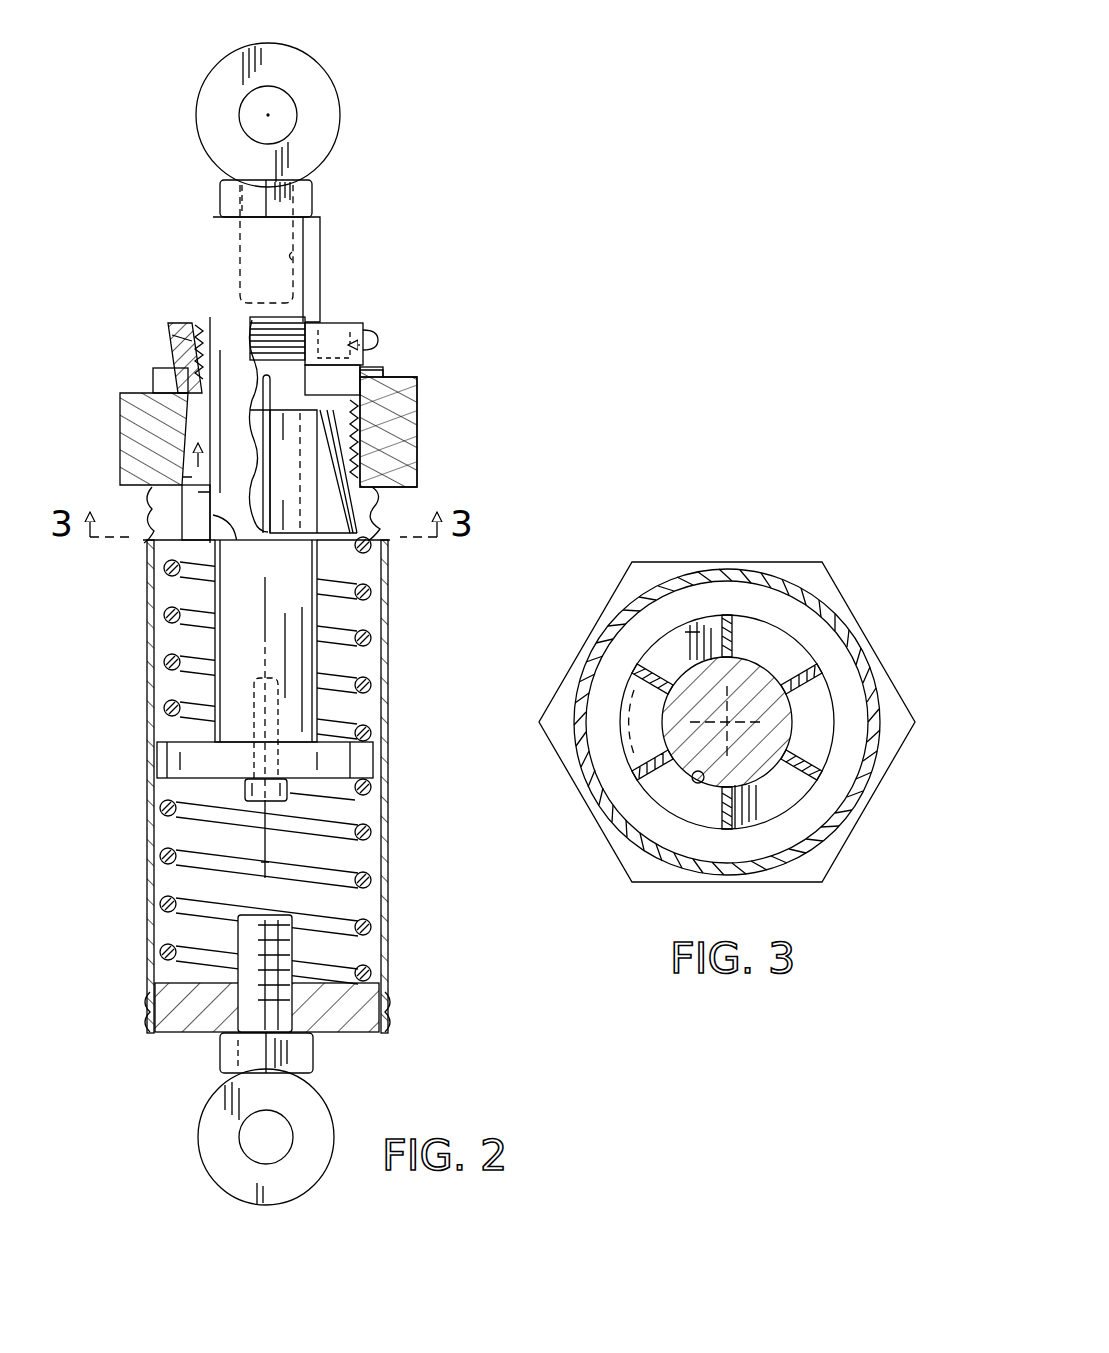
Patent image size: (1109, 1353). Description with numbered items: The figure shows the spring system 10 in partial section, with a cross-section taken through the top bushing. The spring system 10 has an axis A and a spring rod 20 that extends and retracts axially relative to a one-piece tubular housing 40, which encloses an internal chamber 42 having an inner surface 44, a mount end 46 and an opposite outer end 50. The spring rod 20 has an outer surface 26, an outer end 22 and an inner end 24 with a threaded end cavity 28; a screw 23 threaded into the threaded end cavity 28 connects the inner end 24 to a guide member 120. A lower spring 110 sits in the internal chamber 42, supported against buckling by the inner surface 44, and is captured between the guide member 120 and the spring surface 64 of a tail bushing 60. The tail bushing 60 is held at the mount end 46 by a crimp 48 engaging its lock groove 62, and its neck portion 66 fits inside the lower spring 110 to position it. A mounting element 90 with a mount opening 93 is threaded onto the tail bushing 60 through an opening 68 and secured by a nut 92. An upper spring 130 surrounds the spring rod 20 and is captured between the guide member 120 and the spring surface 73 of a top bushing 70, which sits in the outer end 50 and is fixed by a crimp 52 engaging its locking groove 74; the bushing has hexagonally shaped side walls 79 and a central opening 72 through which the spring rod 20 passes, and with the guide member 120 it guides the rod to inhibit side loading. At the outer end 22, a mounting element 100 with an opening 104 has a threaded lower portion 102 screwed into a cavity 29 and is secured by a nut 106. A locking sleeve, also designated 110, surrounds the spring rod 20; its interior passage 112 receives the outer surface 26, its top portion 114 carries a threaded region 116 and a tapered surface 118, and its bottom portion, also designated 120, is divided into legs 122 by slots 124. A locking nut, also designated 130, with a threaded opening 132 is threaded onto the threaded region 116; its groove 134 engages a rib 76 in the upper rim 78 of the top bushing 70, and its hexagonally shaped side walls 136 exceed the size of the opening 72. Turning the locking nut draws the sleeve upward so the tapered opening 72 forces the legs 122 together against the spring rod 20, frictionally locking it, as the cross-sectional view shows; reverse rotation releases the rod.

In FIG. 2, the spring system 10 is at (96, 689).
In FIG. 2, the spring rod 20 is at (206, 253).
In FIG. 3, the spring rod 20 is at (678, 672).
In FIG. 2, the outer end 22 is at (322, 232).
In FIG. 2, the screw 23 is at (288, 797).
In FIG. 2, the inner end 24 is at (213, 727).
In FIG. 2, the outer surface 26 is at (372, 616).
In FIG. 3, the outer surface 26 is at (760, 660).
In FIG. 2, the threaded end cavity 28 is at (280, 702).
In FIG. 2, the cavity 29 is at (292, 258).
In FIG. 2, the tubular housing 40 is at (143, 834).
In FIG. 3, the tubular housing 40 is at (670, 578).
In FIG. 2, the internal chamber 42 is at (170, 883).
In FIG. 3, the internal chamber 42 is at (598, 692).
In FIG. 2, the inner surface 44 is at (153, 937).
In FIG. 3, the inner surface 44 is at (622, 630).
In FIG. 2, the mount end 46 is at (390, 981).
In FIG. 2, the crimp 48 is at (148, 1013).
In FIG. 2, the outer end 50 is at (390, 549).
In FIG. 2, the crimp 52 is at (387, 501).
In FIG. 2, the tail bushing 60 is at (172, 1040).
In FIG. 2, the lock groove 62 is at (387, 1018).
In FIG. 2, the spring surface 64 is at (163, 976).
In FIG. 2, the neck portion 66 is at (296, 951).
In FIG. 2, the opening 68 is at (245, 1043).
In FIG. 2, the top bushing 70 is at (114, 403).
In FIG. 3, the top bushing 70 is at (653, 890).
In FIG. 2, the central opening 72 is at (352, 446).
In FIG. 3, the central opening 72 is at (625, 712).
In FIG. 2, the spring surface 73 is at (150, 549).
In FIG. 3, the spring surface 73 is at (830, 652).
In FIG. 2, the locking groove 74 is at (148, 501).
In FIG. 2, the rib 76 is at (157, 377).
In FIG. 2, the upper rim 78 is at (385, 369).
In FIG. 2, the hexagonally shaped side walls 79 is at (419, 411).
In FIG. 3, the hexagonally shaped side walls 79 is at (618, 862).
In FIG. 2, the mounting element 90 is at (195, 1150).
In FIG. 2, the nut 92 is at (305, 1058).
In FIG. 2, the mount opening 93 is at (275, 1148).
In FIG. 2, the mounting element 100 is at (202, 69).
In FIG. 2, the threaded lower portion 102 is at (238, 243).
In FIG. 2, the opening 104 is at (282, 100).
In FIG. 2, the nut 106 is at (310, 193).
In FIG. 2, the lower spring 110 is at (355, 461).
In FIG. 3, the lower spring 110 is at (806, 640).
In FIG. 2, the interior passage 112 is at (248, 540).
In FIG. 3, the interior passage 112 is at (704, 770).
In FIG. 2, the top portion 114 is at (193, 314).
In FIG. 2, the threaded region 116 is at (290, 334).
In FIG. 2, the tapered surface 118 is at (300, 370).
In FIG. 2, the guide member 120 is at (352, 473).
In FIG. 3, the guide member 120 is at (838, 727).
In FIG. 2, the legs 122 is at (266, 536).
In FIG. 3, the legs 122 is at (664, 804).
In FIG. 2, the slots 124 is at (268, 500).
In FIG. 3, the slots 124 is at (727, 612).
In FIG. 2, the upper spring 130 is at (164, 322).
In FIG. 2, the threaded opening 132 is at (193, 355).
In FIG. 2, the groove 134 is at (366, 350).
In FIG. 2, the hexagonally shaped side walls 136 is at (168, 337).
In FIG. 2, the axis A is at (263, 634).
In FIG. 3, the axis A is at (734, 733).